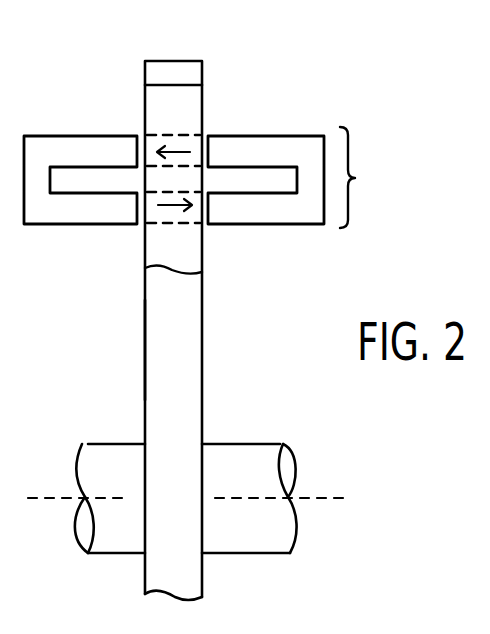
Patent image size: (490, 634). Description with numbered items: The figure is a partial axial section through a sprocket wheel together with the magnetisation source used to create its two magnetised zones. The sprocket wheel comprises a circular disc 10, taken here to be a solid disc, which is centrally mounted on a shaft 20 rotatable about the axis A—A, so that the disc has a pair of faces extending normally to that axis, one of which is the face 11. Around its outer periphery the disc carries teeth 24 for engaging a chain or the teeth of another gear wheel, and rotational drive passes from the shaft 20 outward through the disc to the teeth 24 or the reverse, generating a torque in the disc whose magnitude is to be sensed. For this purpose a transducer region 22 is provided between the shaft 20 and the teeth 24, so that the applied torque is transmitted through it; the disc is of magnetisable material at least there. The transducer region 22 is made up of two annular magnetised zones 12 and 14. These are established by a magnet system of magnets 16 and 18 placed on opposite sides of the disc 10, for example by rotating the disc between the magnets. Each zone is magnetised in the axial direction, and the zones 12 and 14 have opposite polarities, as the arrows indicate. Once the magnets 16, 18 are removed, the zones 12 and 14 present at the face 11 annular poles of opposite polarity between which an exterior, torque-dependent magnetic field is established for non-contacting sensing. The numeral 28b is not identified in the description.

The circular disc 10 is at (188, 327).
The face of the disc 11 is at (145, 353).
The first annular magnetised zone 12 is at (182, 139).
The second annular magnetised zone 14 is at (190, 214).
The first magnet 16 is at (88, 210).
The second magnet 18 is at (314, 226).
The shaft 20 is at (245, 463).
The transducer region 22 is at (365, 177).
The teeth 24 is at (180, 60).
The coil section 28b is at (425, 12).